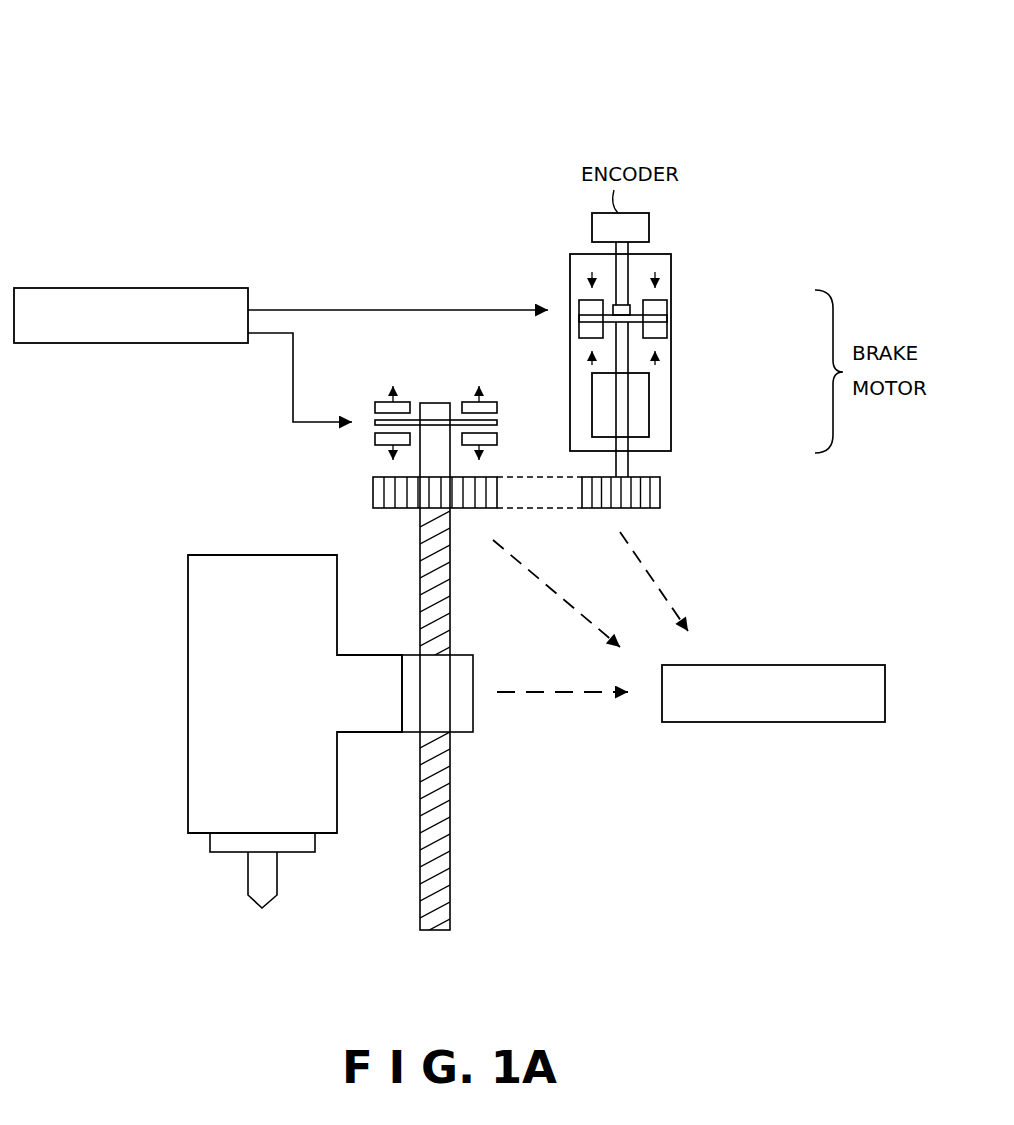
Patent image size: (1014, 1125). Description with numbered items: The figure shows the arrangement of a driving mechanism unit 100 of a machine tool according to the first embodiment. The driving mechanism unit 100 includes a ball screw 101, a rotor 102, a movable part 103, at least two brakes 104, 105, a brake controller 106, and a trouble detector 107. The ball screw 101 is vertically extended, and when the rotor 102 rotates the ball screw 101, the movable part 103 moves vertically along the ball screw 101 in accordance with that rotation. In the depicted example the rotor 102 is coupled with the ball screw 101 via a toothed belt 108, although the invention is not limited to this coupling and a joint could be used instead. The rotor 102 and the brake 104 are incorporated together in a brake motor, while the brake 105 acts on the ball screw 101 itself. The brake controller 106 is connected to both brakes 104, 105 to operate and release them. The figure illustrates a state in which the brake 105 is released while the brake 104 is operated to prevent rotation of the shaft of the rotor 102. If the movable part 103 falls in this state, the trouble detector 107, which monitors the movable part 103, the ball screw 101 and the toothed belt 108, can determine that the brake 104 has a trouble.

The driving mechanism unit 100 is at (128, 95).
The ball screw 101 is at (437, 814).
The rotor 102 is at (642, 413).
The movable part 103 is at (196, 654).
The brake 104 is at (667, 315).
The brake 105 is at (375, 423).
The brake controller 106 is at (113, 288).
The trouble detector 107 is at (851, 665).
The toothed belt 108 is at (537, 493).